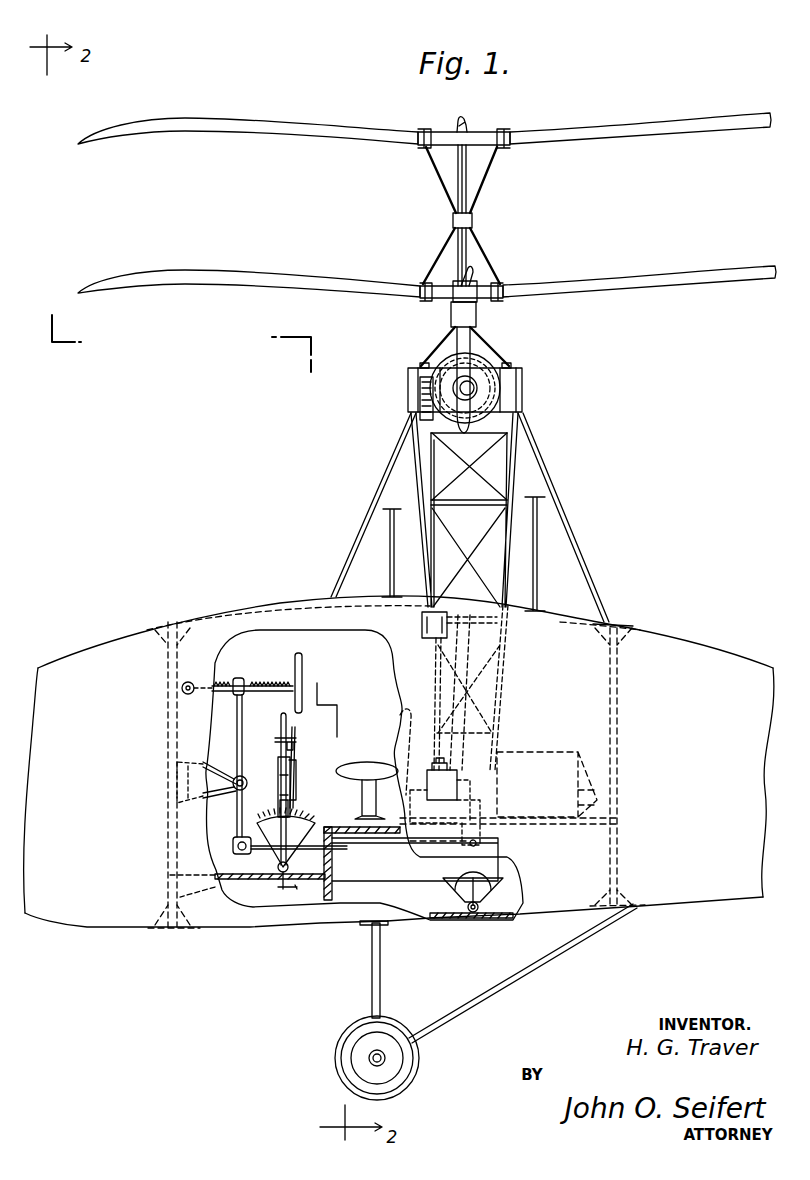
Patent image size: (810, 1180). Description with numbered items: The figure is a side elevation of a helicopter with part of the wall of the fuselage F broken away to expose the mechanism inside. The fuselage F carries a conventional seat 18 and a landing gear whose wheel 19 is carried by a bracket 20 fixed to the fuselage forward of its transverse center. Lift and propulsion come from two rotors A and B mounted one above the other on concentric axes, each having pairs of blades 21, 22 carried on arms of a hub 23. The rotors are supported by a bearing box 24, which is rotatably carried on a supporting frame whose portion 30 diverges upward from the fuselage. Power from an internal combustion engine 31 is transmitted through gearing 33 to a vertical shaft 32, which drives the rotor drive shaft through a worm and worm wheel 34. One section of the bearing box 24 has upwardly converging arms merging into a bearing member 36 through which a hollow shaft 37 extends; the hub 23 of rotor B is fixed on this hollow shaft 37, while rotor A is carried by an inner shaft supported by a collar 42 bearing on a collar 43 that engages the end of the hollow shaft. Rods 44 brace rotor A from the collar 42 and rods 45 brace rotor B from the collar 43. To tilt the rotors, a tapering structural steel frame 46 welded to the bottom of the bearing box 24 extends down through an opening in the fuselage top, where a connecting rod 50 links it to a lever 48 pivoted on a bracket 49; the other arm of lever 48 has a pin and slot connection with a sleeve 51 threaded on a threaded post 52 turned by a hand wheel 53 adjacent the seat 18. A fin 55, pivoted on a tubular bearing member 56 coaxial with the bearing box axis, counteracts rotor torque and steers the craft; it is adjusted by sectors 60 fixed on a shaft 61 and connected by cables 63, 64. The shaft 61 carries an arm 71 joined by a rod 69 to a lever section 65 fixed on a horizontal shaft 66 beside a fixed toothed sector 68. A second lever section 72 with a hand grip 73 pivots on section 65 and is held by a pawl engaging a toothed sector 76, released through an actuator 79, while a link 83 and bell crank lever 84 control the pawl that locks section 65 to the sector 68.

The seat 18 is at (370, 762).
The wheel 19 is at (398, 1068).
The bracket 20 is at (456, 1004).
The blades 21 is at (269, 273).
The blades 22 is at (466, 118).
The hub 23 is at (456, 125).
The bearing box 24 is at (519, 383).
The supporting frame portion 30 is at (376, 520).
The prime mover 31 is at (547, 752).
The vertical shaft 32 is at (430, 470).
The gearing 33 is at (442, 802).
The worm and worm wheel 34 is at (410, 400).
The bearing member 36 is at (450, 327).
The hollow shaft 37 is at (456, 262).
The collar 42 is at (456, 215).
The collar 43 is at (473, 222).
The brace rods 44 is at (466, 186).
The brace rods 45 is at (458, 249).
The tapering frame 46 is at (517, 480).
The lever 48 is at (238, 760).
The bracket 49 is at (225, 800).
The connecting link 50 is at (375, 843).
The sleeve 51 is at (241, 678).
The threaded post 52 is at (276, 693).
The hand wheel 53 is at (304, 671).
The fin 55 is at (473, 352).
The tubular bearing member 56 is at (481, 381).
The sectors 60 is at (498, 905).
The shaft 61 is at (468, 915).
The cable 63 is at (453, 878).
The cable 64 is at (487, 878).
The lever section 65 is at (257, 877).
The horizontal shaft 66 is at (283, 884).
The toothed sector 68 is at (300, 836).
The rod 69 is at (397, 881).
The arm 71 is at (450, 913).
The lever section 72 is at (278, 780).
The hand grip 73 is at (281, 727).
The toothed sector 76 is at (279, 797).
The actuator 79 is at (279, 748).
The link 83 is at (296, 775).
The bell crank operating lever 84 is at (295, 746).
The rotor A is at (627, 141).
The rotor B is at (602, 283).
The fuselage F is at (399, 762).